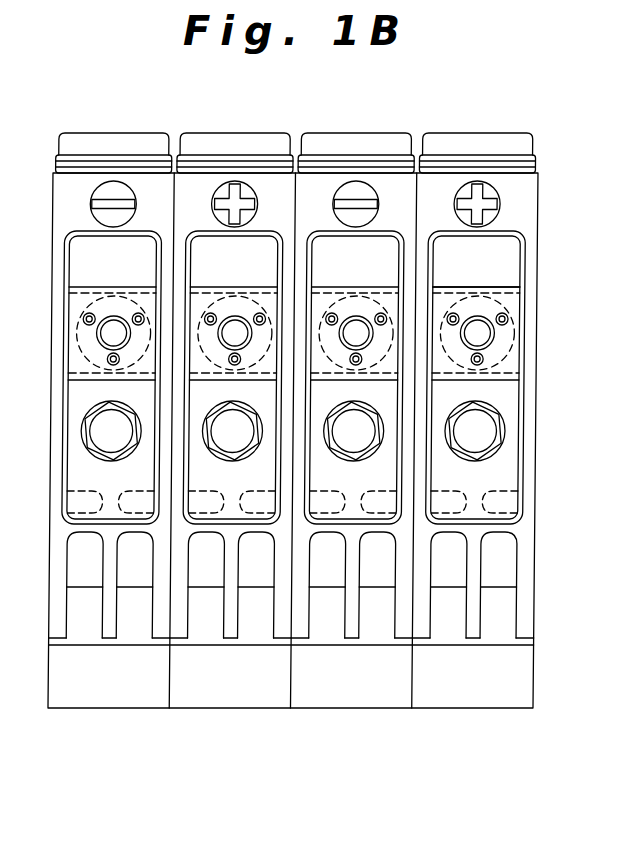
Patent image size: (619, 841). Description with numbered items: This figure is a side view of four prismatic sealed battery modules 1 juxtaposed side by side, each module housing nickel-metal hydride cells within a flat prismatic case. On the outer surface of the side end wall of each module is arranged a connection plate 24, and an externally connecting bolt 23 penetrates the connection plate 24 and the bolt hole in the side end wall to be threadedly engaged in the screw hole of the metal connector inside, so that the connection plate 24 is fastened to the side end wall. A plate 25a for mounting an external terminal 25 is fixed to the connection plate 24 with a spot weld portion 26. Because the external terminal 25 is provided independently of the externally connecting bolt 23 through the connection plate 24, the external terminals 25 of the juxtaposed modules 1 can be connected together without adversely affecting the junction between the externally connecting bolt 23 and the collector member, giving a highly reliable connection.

The prismatic sealed battery module 1 is at (328, 384).
The externally connecting bolt 23 is at (525, 431).
The connection plate 24 is at (511, 377).
The external terminal 25 is at (511, 333).
The plate for mounting external terminal 25a is at (515, 270).
The spot weld portion 26 is at (539, 309).